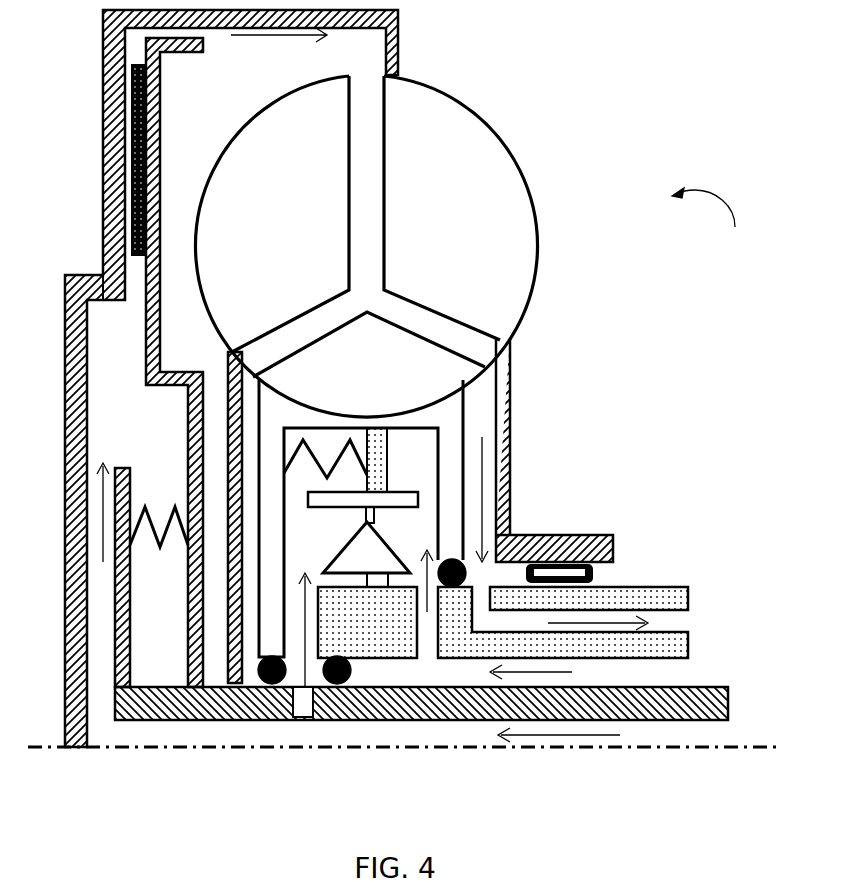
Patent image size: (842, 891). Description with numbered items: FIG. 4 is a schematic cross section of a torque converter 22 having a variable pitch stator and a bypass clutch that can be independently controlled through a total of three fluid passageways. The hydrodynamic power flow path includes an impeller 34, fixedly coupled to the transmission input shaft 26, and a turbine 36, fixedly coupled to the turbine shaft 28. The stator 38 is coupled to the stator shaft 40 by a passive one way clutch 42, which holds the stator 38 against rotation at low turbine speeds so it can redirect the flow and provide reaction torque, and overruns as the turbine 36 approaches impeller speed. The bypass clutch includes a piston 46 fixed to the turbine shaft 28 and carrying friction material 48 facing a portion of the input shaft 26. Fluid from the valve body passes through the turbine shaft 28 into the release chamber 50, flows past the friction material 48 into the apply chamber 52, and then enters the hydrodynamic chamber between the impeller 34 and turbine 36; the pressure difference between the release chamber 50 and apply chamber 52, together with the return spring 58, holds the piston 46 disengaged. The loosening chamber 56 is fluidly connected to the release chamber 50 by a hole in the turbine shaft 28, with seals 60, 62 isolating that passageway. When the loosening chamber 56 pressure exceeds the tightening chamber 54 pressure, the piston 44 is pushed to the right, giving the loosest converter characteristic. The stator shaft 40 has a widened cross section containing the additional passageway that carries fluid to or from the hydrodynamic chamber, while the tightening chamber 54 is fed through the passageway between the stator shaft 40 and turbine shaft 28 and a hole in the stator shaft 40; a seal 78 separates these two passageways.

The torque converter 22 is at (710, 227).
The transmission input shaft 26 is at (103, 118).
The turbine shaft 28 is at (697, 687).
The impeller 34 is at (445, 237).
The turbine 36 is at (255, 235).
The stator 38 is at (405, 385).
The stator shaft 40 is at (658, 586).
The one way clutch 42 is at (387, 580).
The piston 44 is at (387, 455).
The piston 46 is at (172, 372).
The friction material 48 is at (160, 125).
The release chamber 50 is at (114, 429).
The apply chamber 52 is at (249, 74).
The tightening chamber 54 is at (395, 545).
The loosening chamber 56 is at (305, 549).
The return spring 58 is at (146, 500).
The seal 60 is at (272, 686).
The seal 62 is at (308, 440).
The seal 78 is at (452, 588).